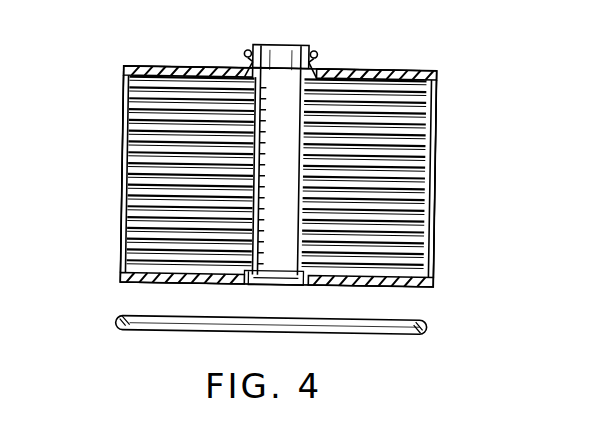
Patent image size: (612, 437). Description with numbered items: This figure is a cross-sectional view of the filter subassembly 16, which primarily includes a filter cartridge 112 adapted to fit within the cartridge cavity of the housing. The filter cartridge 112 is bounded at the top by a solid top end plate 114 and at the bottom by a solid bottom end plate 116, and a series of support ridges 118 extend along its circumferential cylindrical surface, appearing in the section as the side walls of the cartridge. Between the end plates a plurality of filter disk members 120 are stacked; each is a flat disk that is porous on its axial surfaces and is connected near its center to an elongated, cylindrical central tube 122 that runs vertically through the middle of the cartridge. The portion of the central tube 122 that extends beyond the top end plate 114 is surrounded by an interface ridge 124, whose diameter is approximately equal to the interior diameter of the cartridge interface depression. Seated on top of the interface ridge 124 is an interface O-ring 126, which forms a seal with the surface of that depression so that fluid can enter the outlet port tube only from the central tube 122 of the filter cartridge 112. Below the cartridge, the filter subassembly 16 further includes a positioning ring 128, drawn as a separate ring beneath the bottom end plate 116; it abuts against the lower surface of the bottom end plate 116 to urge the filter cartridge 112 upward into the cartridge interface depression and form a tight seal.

The filter subassembly 16 is at (452, 134).
The filter cartridge 112 is at (419, 55).
The top end plate 114 is at (174, 65).
The bottom end plate 116 is at (436, 285).
The support ridges 118 is at (122, 186).
The filter disk members 120 is at (150, 130).
The central tube 122 is at (279, 52).
The interface ridge 124 is at (316, 60).
The interface O-ring 126 is at (246, 50).
The positioning ring 128 is at (430, 330).